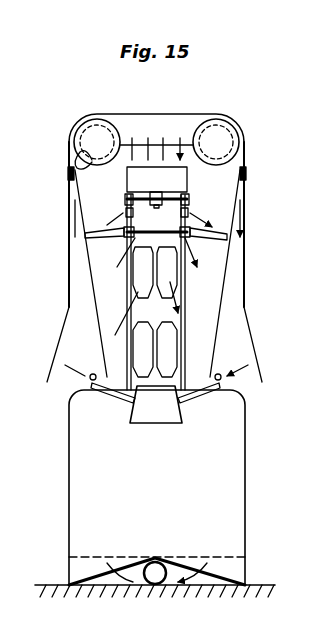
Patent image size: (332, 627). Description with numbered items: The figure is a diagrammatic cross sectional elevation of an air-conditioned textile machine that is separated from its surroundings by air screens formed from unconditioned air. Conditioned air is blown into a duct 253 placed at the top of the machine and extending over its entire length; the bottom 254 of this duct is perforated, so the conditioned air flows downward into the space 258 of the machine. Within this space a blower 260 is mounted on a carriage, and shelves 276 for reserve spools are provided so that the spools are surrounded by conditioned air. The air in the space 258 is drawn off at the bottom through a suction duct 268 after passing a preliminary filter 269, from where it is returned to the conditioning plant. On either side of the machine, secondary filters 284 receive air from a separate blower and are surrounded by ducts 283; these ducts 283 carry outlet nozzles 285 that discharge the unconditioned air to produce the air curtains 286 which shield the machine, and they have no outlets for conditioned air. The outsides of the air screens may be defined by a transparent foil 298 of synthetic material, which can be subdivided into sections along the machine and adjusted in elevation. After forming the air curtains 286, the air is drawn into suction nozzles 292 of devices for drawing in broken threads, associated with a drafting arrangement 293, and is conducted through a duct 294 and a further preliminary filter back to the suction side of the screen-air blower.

The duct 253 is at (202, 108).
The bottom of the duct 254 is at (145, 145).
The ducts 283 is at (74, 134).
The secondary filters 284 is at (86, 124).
The outlet nozzles 285 is at (84, 158).
The blower 260 is at (137, 180).
The space 258 is at (217, 212).
The transparent foil 298 is at (245, 252).
The shelves 276 is at (104, 240).
The air curtains 286 is at (82, 300).
The drafting arrangement 293 is at (214, 373).
The suction nozzles 292 is at (222, 385).
The duct 294 is at (160, 408).
The suction duct 268 is at (180, 533).
The preliminary filter 269 is at (222, 575).